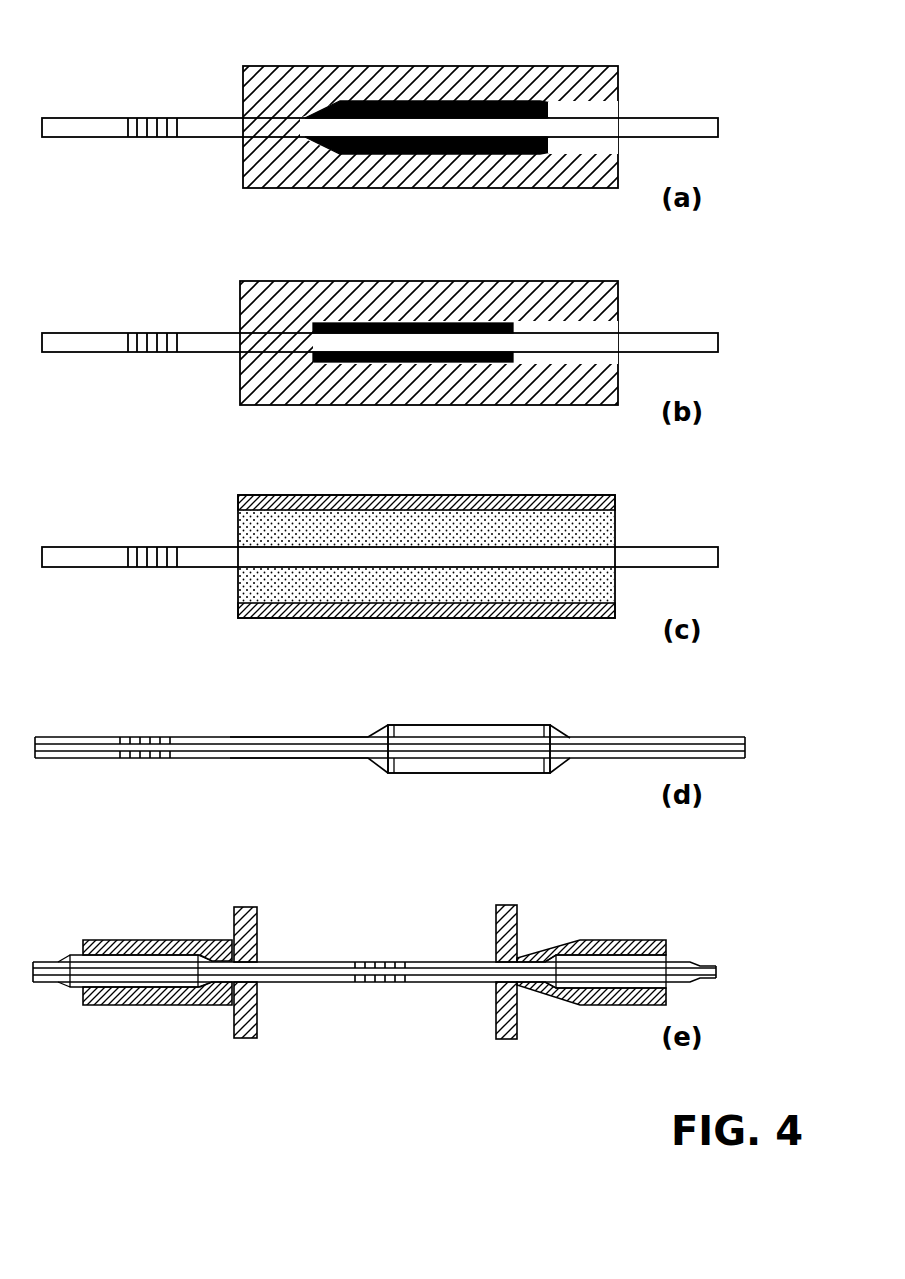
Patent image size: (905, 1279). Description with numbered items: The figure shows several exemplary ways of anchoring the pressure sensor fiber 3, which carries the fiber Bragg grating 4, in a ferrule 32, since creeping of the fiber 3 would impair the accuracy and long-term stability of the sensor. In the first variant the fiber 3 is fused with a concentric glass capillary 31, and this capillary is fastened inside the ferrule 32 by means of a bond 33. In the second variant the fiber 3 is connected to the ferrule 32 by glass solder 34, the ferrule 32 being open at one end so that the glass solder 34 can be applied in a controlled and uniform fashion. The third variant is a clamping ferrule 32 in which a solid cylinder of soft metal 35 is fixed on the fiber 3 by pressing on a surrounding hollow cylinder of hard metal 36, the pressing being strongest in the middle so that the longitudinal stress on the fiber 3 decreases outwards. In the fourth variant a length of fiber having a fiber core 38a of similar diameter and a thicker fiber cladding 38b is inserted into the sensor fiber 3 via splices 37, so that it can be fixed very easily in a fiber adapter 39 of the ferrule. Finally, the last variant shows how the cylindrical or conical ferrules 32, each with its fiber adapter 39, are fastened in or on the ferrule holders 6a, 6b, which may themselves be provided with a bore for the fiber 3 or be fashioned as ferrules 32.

The pressure sensor fiber 3 is at (215, 132).
The fiber Bragg grating 4 is at (158, 118).
The glass capillary 31 is at (368, 100).
The ferrule 32 is at (440, 78).
The bond 33 is at (497, 95).
The glass solder 34 is at (370, 318).
The soft metal 35 is at (362, 538).
The hard metal 36 is at (437, 503).
The splices 37 is at (475, 721).
The fiber core 38a is at (270, 746).
The fiber cladding 38b is at (335, 746).
The fiber adapter 39 is at (445, 763).
The ferrule holder 6a is at (232, 921).
The ferrule holder 6b is at (521, 925).